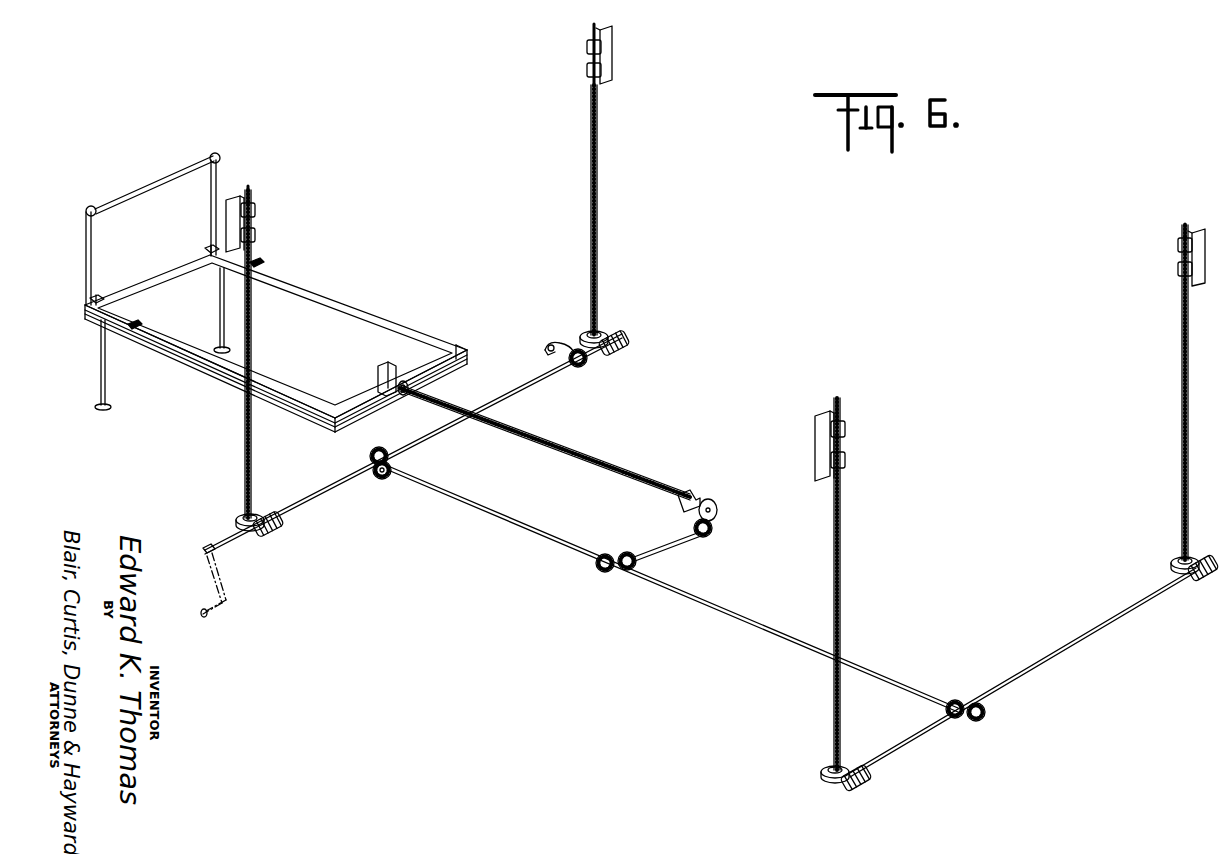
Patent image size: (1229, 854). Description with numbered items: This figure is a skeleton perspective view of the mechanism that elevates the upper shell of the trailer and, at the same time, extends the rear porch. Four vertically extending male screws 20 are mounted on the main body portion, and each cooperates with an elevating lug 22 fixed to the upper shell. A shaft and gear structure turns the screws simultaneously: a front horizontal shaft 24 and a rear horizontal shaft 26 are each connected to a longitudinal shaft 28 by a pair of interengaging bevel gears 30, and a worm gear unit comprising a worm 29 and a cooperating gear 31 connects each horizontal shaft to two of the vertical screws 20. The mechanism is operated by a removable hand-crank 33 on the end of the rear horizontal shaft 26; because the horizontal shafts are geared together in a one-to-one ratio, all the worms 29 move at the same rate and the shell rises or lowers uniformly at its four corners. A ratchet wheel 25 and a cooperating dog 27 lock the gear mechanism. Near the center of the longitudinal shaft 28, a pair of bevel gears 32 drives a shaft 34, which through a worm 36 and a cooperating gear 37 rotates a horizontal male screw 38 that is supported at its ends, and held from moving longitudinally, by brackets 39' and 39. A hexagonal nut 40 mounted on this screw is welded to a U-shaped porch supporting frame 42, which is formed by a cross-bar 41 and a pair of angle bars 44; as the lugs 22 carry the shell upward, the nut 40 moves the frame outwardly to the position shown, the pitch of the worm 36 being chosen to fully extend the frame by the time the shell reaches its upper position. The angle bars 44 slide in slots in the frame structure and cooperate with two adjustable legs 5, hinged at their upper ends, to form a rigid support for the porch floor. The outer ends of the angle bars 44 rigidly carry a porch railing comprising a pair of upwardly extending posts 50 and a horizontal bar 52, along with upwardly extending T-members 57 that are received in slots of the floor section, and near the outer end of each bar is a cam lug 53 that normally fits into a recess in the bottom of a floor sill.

The adjustable legs 5 is at (218, 294).
The vertical male screws 20 is at (598, 196).
The elevating lug 22 is at (256, 207).
The front horizontal shaft 24 is at (1086, 621).
The ratchet wheel 25 is at (585, 367).
The rear horizontal shaft 26 is at (316, 487).
The dog 27 is at (560, 340).
The longitudinal shaft 28 is at (722, 625).
The worm 29 is at (618, 346).
The interengaging bevel gears 30 is at (375, 455).
The cooperating gear 31 is at (600, 333).
The bevel gears 32 is at (620, 555).
The removable hand-crank 33 is at (232, 589).
The shaft 34 is at (668, 548).
The worm 36 is at (713, 535).
The cooperating gear 37 is at (712, 508).
The horizontal male screw 38 is at (538, 440).
The bracket 39 is at (367, 368).
The bracket 39' is at (702, 474).
The hexagonal nut 40 is at (405, 381).
The cross-bar 41 is at (372, 403).
The porch supporting frame 42 is at (445, 375).
The angle bars 44 is at (338, 302).
The posts 50 is at (211, 206).
The horizontal bar 52 is at (128, 190).
The cam lug 53 is at (256, 265).
The T-members 57 is at (210, 250).